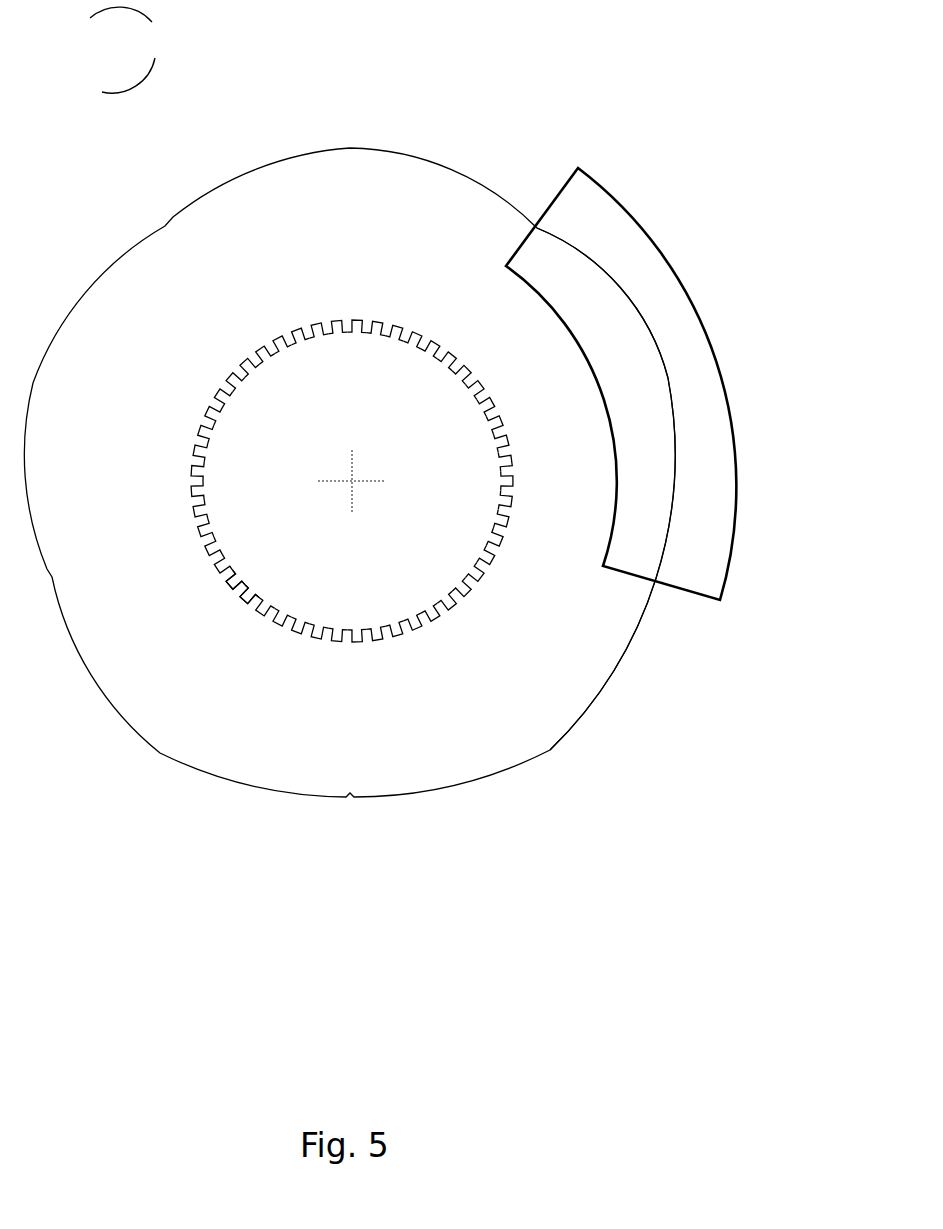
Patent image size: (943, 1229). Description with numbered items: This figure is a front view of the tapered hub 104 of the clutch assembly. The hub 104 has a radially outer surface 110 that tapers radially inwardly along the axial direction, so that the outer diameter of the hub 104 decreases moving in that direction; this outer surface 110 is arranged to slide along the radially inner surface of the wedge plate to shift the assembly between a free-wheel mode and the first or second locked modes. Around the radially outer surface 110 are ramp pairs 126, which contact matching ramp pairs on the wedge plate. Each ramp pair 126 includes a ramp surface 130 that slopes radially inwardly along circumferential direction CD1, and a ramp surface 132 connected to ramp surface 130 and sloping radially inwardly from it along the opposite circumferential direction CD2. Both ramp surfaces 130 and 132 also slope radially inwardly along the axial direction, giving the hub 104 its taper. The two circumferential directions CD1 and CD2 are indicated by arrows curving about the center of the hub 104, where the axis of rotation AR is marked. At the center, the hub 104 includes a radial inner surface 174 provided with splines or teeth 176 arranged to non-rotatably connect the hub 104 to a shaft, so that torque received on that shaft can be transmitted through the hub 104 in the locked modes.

The hub 104 is at (431, 414).
The radially outer surface 110 is at (460, 170).
The ramp pairs 126 is at (672, 459).
The ramp surface 130 is at (676, 470).
The ramp surface 132 is at (610, 283).
The radial inner surface 174 is at (426, 600).
The splines or teeth 176 is at (248, 574).
The axis of rotation AR is at (353, 480).
The circumferential direction CD1 is at (210, 33).
The circumferential direction CD2 is at (192, 10).